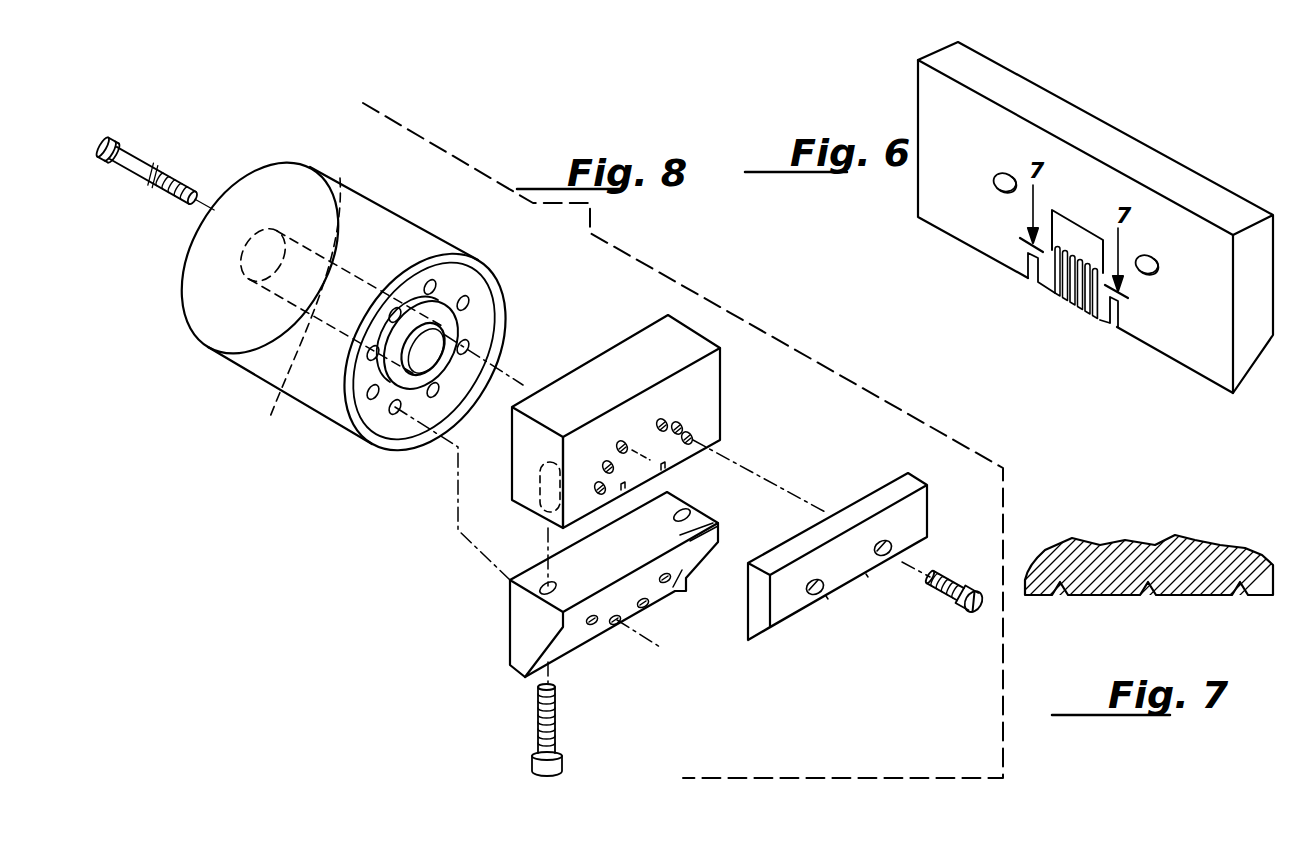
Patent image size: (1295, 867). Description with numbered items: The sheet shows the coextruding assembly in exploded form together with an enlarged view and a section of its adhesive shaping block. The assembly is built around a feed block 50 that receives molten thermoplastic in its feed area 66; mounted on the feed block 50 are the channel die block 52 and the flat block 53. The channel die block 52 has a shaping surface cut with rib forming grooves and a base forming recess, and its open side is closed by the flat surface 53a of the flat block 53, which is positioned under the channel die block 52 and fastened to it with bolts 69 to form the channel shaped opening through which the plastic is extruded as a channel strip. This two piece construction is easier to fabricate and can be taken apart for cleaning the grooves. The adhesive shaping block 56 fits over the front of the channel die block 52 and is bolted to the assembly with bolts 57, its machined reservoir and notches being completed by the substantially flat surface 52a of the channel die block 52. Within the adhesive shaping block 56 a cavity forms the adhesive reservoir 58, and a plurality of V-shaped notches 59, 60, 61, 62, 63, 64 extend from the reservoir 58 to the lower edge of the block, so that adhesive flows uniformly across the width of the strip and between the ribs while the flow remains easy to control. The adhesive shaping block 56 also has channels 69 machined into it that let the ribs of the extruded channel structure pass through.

In FIG. 8, the feed block 50 is at (380, 217).
In FIG. 8, the channel die block 52 is at (669, 407).
In FIG. 8, the flat surface of channel die block 52a is at (702, 402).
In FIG. 8, the flat block 53 is at (648, 591).
In FIG. 8, the flat surface 53a is at (718, 523).
In FIG. 8, the adhesive shaping block 56 is at (868, 507).
In FIG. 6, the adhesive shaping block 56 is at (1047, 98).
In FIG. 7, the adhesive shaping block 56 is at (1235, 557).
In FIG. 8, the bolts 57 is at (943, 598).
In FIG. 6, the adhesive reservoir 58 is at (1082, 240).
In FIG. 6, the V-shaped notch 59 is at (1110, 323).
In FIG. 6, the V-shaped notch 60 is at (1097, 317).
In FIG. 7, the V-shaped notch 60 is at (1240, 597).
In FIG. 6, the V-shaped notch 61 is at (1087, 312).
In FIG. 7, the V-shaped notch 61 is at (1150, 597).
In FIG. 6, the V-shaped notch 62 is at (1077, 307).
In FIG. 7, the V-shaped notch 62 is at (1060, 597).
In FIG. 6, the V-shaped notch 63 is at (1070, 303).
In FIG. 6, the V-shaped notch 64 is at (1053, 287).
In FIG. 8, the feed area 66 is at (302, 311).
In FIG. 8, the bolts 69 is at (175, 178).
In FIG. 6, the bolts 69 is at (1028, 277).